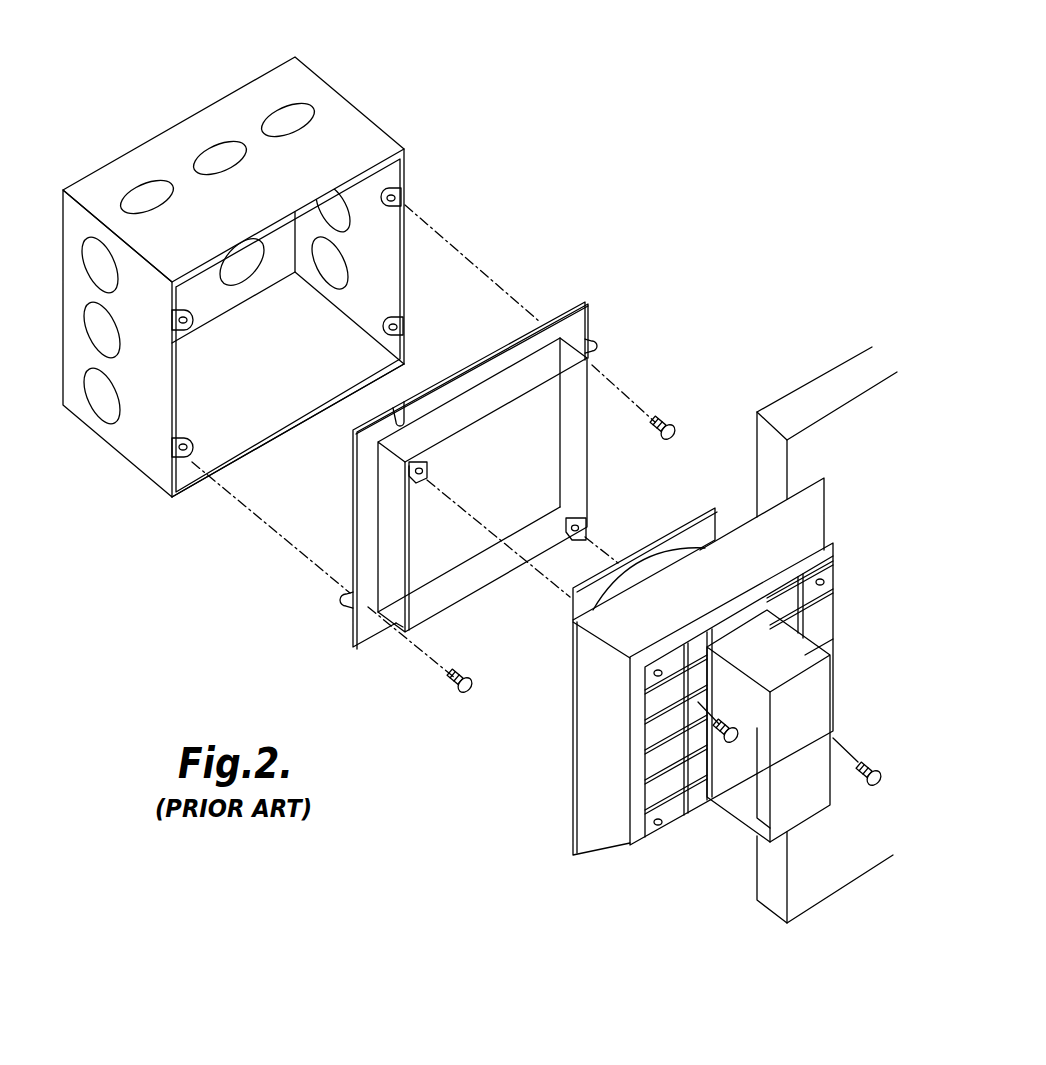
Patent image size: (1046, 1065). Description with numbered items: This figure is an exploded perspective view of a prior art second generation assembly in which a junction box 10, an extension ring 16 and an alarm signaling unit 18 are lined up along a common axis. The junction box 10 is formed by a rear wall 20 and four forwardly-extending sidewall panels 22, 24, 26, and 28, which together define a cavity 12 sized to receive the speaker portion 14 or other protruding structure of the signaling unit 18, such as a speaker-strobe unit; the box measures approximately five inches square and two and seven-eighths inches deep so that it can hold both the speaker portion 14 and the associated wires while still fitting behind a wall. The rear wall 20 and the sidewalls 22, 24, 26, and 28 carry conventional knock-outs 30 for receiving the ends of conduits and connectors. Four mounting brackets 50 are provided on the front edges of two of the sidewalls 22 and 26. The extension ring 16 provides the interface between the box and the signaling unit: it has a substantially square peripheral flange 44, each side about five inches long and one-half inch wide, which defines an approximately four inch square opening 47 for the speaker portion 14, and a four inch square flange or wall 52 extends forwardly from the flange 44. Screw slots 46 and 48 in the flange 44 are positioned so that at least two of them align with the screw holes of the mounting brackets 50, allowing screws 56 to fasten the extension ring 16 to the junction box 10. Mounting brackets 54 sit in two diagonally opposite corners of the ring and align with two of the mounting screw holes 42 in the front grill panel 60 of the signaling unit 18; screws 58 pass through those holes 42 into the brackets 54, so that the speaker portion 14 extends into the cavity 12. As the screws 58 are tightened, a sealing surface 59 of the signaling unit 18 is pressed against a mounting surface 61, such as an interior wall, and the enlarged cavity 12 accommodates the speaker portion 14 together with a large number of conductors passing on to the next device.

The junction box 10 is at (380, 78).
The cavity 12 is at (174, 442).
The speaker portion 14 is at (720, 500).
The extension ring 16 is at (592, 289).
The alarm signaling unit 18 is at (524, 821).
The rear wall 20 is at (233, 300).
The sidewall panel 22 is at (130, 433).
The sidewall panel 24 is at (386, 132).
The sidewall panel 26 is at (389, 243).
The sidewall panel 28 is at (233, 443).
The knock-outs 30 is at (220, 156).
The mounting screw holes 42 is at (826, 582).
The peripheral flange 44 is at (364, 510).
The screw slots 46 is at (584, 347).
The square opening 47 is at (442, 560).
The screw slots 48 is at (398, 402).
The mounting brackets 50 is at (404, 196).
The square flange or wall 52 is at (398, 623).
The mounting brackets 54 is at (429, 471).
The screws 56 is at (680, 433).
The screws 58 is at (735, 745).
The sealing surface 59 is at (568, 838).
The front grill panel 60 is at (665, 828).
The mounting surface 61 is at (818, 428).